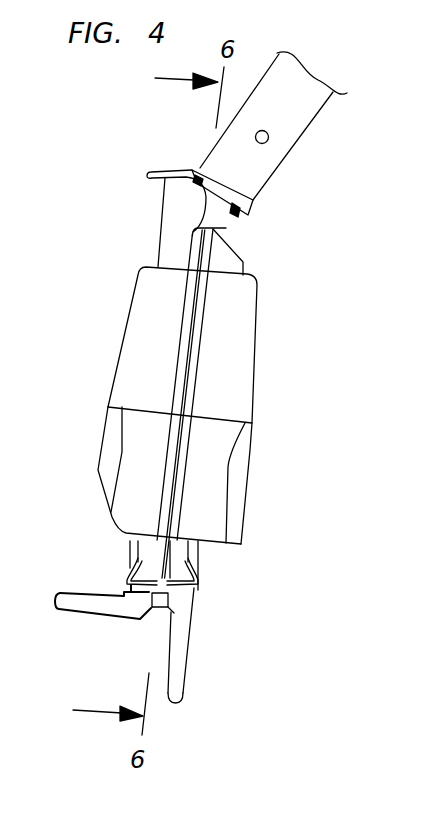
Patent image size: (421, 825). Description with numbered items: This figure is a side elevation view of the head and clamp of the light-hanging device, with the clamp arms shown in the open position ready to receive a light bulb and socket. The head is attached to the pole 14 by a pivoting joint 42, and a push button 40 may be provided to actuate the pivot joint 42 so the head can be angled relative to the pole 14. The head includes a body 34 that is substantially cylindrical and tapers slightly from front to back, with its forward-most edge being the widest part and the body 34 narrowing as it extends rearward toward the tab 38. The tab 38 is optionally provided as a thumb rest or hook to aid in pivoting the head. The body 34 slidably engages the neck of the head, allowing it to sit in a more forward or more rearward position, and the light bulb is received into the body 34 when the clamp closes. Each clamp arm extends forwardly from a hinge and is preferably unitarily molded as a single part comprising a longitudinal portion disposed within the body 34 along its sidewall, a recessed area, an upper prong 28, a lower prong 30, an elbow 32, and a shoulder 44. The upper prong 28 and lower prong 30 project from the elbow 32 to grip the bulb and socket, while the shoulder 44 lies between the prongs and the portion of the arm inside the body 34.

The pole 14 is at (307, 112).
The push button 40 is at (268, 143).
The pivot joint 42 is at (229, 228).
The tab 38 is at (148, 177).
The body 34 is at (129, 320).
The shoulder 44 is at (193, 568).
The upper prong 28 is at (57, 605).
The elbow 32 is at (157, 609).
The lower prong 30 is at (183, 693).